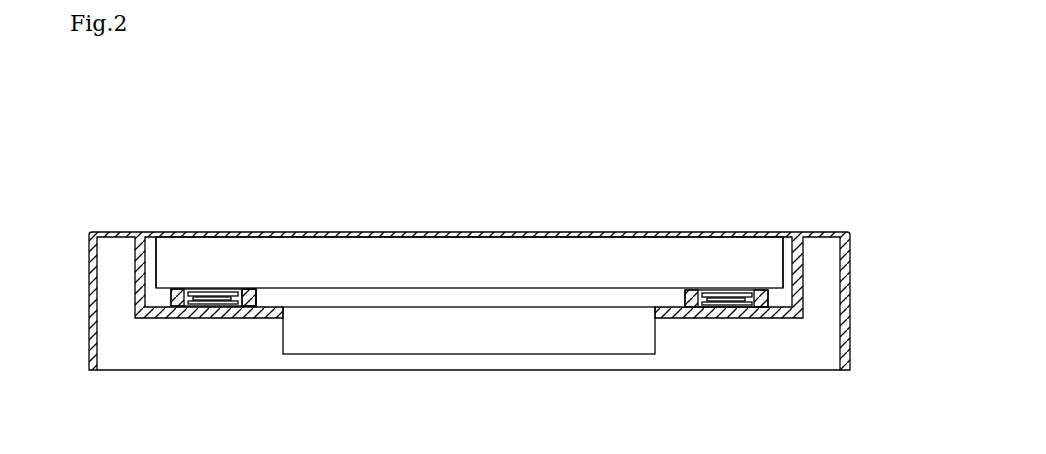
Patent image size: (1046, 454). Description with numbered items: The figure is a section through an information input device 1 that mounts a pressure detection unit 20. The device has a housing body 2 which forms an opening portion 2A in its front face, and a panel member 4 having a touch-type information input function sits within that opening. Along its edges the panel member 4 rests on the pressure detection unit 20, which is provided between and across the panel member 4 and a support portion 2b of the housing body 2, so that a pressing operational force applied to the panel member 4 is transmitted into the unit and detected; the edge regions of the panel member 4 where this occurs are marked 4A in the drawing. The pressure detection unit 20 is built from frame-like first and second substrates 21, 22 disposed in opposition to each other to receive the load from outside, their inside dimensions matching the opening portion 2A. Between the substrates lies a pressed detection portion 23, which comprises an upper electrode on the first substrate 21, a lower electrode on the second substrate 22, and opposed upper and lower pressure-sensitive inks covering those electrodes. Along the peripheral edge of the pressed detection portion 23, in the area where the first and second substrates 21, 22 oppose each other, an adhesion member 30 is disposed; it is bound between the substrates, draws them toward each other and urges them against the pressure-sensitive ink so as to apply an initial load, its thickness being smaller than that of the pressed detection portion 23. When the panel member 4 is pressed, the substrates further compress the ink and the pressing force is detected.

The information input device 1 is at (200, 126).
The housing body 2 is at (120, 230).
The opening portion 2A is at (150, 236).
The support portion 2b is at (668, 306).
The panel member 4 is at (475, 247).
The edge portion of display panel 4A is at (238, 270).
The pressure detection unit 20 is at (177, 311).
The first substrate 21 is at (199, 289).
The second substrate 22 is at (224, 307).
The pressed detection portion 23 is at (203, 307).
The adhesion member 30 is at (258, 300).